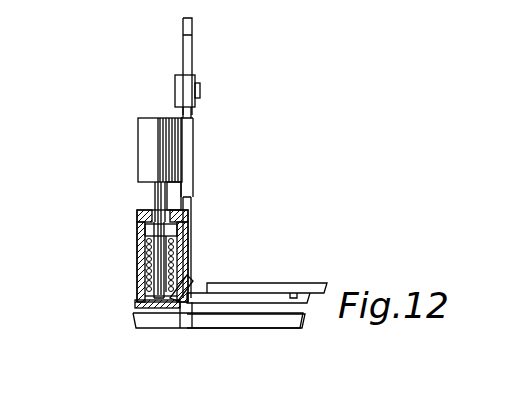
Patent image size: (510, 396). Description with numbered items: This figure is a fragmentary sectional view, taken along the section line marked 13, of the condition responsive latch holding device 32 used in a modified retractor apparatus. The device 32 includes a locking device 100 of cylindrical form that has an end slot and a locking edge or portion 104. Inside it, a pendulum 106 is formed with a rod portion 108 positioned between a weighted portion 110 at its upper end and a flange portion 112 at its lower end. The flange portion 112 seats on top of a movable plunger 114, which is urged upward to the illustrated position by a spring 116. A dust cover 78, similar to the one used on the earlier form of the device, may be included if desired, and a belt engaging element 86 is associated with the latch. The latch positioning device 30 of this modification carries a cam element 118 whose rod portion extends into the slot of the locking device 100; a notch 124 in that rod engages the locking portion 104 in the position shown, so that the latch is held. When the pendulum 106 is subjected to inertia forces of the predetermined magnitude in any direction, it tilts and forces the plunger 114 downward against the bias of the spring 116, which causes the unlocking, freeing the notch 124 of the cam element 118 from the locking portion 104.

The section line 13- 13 is at (149, 30).
The dust cover 78 is at (198, 158).
The belt engaging element 86 is at (187, 84).
The pendulum 106 is at (136, 154).
The weighted portion 110 is at (153, 118).
The rod portion 108 is at (155, 197).
The condition responsive latch holding device 32 is at (136, 238).
The movable plunger 114 is at (158, 264).
The flange portion 112 is at (182, 220).
The spring 116 is at (174, 252).
The locking device 100 is at (140, 284).
The notch 124 is at (186, 312).
The locking edge or portion 104 is at (168, 306).
The cam element 118 is at (248, 311).
The latch positioning device 30 is at (288, 279).